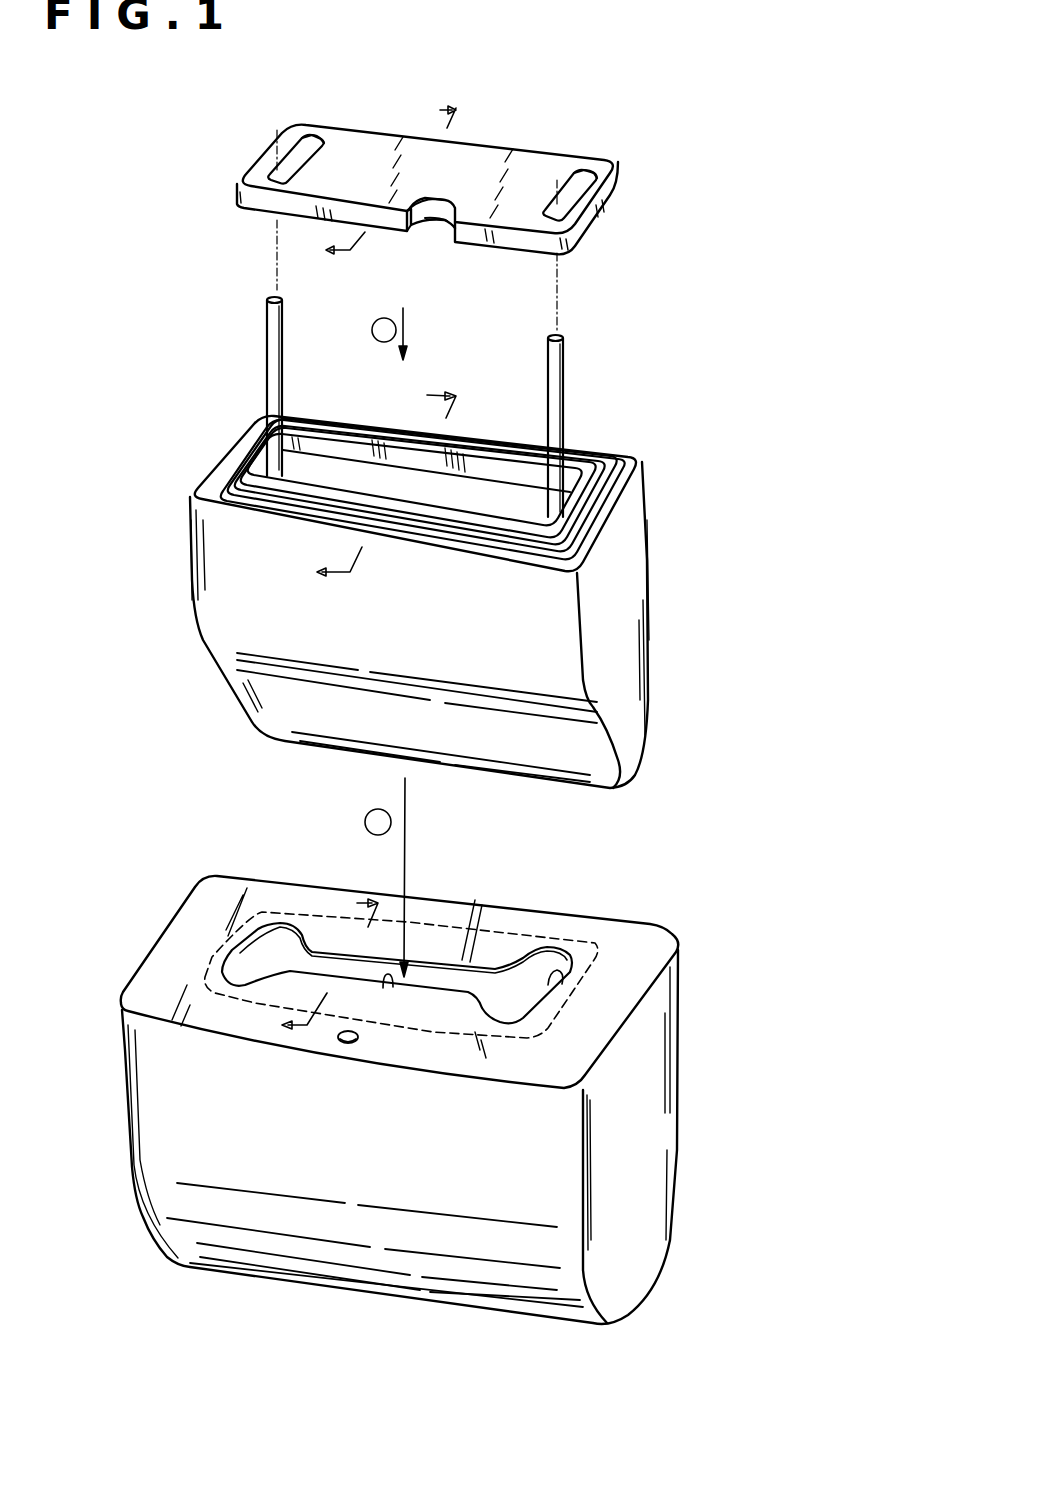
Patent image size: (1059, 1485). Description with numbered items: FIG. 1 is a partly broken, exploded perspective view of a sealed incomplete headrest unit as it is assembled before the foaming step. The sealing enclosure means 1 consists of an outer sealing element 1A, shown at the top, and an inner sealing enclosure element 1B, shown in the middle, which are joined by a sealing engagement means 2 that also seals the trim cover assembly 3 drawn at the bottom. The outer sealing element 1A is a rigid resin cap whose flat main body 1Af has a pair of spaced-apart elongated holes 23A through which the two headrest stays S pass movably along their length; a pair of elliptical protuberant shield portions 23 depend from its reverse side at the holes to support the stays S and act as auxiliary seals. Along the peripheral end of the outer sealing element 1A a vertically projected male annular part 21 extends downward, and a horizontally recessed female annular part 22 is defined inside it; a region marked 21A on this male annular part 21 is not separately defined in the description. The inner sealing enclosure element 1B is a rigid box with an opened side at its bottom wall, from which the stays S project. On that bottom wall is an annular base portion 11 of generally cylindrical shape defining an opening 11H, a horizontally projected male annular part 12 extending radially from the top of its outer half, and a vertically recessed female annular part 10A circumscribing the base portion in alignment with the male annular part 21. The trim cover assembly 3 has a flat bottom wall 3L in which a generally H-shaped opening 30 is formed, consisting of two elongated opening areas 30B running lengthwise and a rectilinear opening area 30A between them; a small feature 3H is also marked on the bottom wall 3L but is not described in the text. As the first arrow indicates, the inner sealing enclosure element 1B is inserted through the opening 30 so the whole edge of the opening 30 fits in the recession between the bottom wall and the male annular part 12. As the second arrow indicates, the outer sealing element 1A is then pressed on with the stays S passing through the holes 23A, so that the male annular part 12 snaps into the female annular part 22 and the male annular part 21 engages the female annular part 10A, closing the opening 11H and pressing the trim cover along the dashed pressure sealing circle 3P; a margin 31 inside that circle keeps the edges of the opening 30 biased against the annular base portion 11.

The sealing enclosure means 1 is at (464, 421).
The outer sealing element 1A is at (504, 209).
The flat main body 1Af is at (480, 168).
The inner sealing enclosure element 1B is at (650, 478).
The sealing engagement means 2 is at (497, 413).
The vertically projected male annular part 21 is at (607, 203).
The notch of seal plate 21A is at (413, 226).
The horizontally recessed female annular part 22 is at (441, 246).
The protuberant shield portions 23 is at (300, 157).
The elongated holes 23A is at (312, 145).
The headrest stays S is at (263, 372).
The vertically recessed female annular part 10A is at (600, 506).
The horizontally projected male annular part 12 is at (562, 545).
The annular base portion 11 is at (550, 563).
The opening 11H is at (324, 445).
The trim cover assembly 3 is at (427, 1051).
The flat bottom wall 3L is at (192, 944).
The pressure sealing circle 3P is at (494, 928).
The opening 30 is at (436, 981).
The rectilinear opening area 30A is at (384, 982).
The elongated opening areas 30B is at (276, 925).
The margin 31 is at (426, 943).
The hole 3H is at (343, 1042).